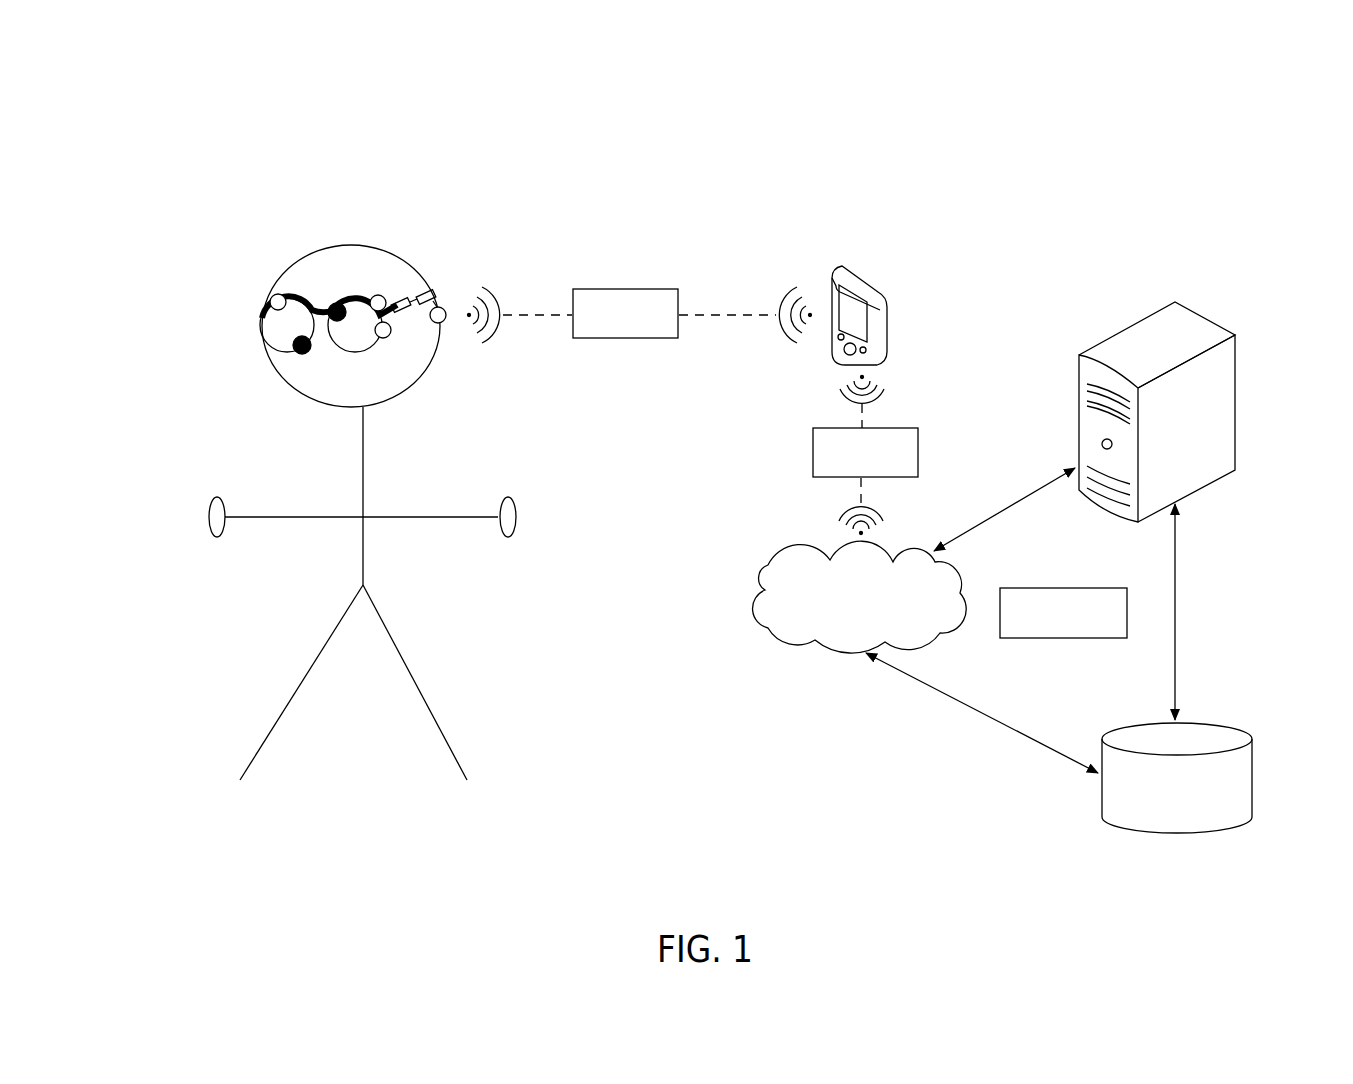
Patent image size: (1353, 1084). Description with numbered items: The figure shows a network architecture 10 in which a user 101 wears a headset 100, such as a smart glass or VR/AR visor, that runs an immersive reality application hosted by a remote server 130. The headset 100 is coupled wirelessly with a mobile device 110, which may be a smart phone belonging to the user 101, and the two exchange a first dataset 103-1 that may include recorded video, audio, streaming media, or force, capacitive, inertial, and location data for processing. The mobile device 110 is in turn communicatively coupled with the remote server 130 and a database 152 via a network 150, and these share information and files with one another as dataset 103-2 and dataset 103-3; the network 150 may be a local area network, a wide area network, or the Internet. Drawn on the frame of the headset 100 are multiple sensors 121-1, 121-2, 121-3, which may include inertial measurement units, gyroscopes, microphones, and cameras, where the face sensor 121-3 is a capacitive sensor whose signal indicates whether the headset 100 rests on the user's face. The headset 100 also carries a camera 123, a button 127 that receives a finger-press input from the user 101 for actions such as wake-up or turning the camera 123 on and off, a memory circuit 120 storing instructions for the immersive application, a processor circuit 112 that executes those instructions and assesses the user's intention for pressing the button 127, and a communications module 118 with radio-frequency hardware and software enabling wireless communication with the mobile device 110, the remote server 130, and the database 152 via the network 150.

The architecture 10 is at (995, 116).
The headset 100 is at (361, 305).
The user 101 is at (277, 716).
The mobile device 110 is at (883, 295).
The processor circuit 112 is at (392, 294).
The communications module 118 is at (442, 323).
The memory circuit 120 is at (430, 288).
The sensor 121-1 is at (372, 298).
The sensor 121-2 is at (337, 303).
The face sensor 121-3 is at (296, 352).
The camera 123 is at (279, 294).
The button 127 is at (386, 338).
The first dataset 103-1 is at (590, 330).
The dataset 103-2 is at (830, 470).
The dataset 103-3 is at (1028, 630).
The remote server 130 is at (1160, 440).
The network 150 is at (835, 635).
The database 152 is at (1152, 753).